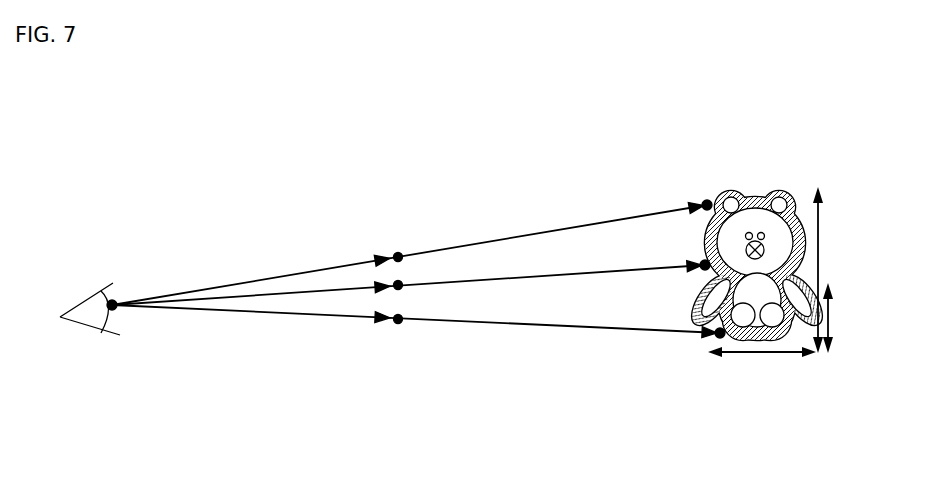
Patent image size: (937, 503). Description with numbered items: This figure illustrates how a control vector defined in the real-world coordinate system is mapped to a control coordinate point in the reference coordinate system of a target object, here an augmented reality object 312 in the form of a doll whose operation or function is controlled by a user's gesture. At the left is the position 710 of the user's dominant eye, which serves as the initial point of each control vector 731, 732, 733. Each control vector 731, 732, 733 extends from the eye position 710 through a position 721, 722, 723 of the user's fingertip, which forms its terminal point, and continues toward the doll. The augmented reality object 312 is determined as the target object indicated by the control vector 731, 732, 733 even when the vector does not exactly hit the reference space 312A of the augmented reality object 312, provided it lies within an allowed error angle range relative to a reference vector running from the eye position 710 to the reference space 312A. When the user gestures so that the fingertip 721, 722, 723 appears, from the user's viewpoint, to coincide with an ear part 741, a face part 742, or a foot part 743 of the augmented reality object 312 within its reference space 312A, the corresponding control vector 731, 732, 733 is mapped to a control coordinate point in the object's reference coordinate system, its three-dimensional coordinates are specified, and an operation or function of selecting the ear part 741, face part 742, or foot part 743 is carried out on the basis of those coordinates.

The position of an eye of the user 710 is at (122, 315).
The position of a fingertip of the user 721 is at (398, 255).
The position of a fingertip of the user 722 is at (400, 287).
The position of a fingertip of the user 723 is at (398, 322).
The control vector 731 is at (250, 282).
The control vector 732 is at (327, 290).
The control vector 733 is at (290, 315).
The ear part 741 is at (707, 204).
The face part 742 is at (705, 265).
The foot part 743 is at (712, 334).
The augmented reality object 312 is at (755, 197).
The reference space of the augmented reality object 312A is at (823, 320).